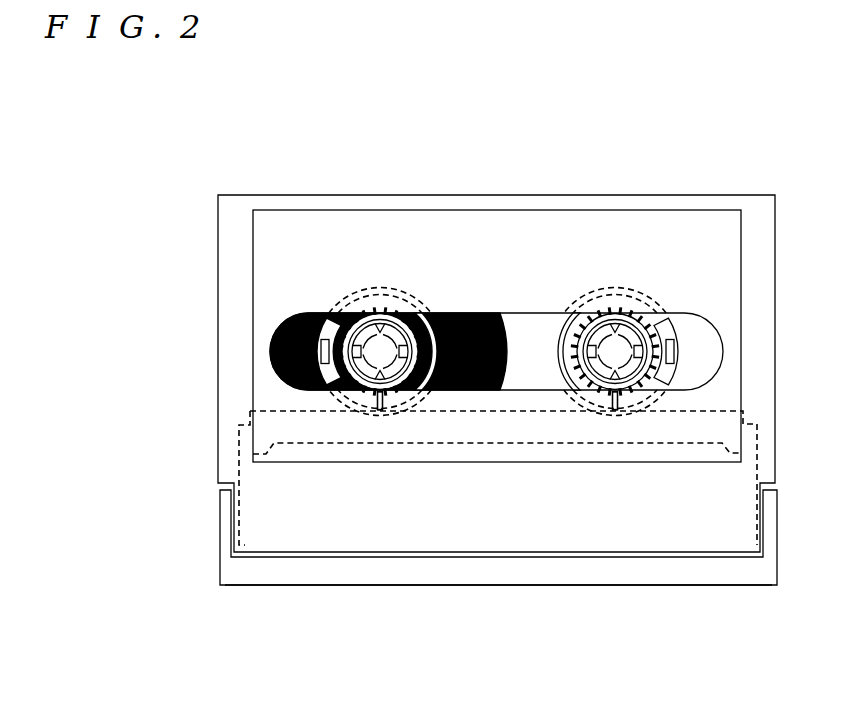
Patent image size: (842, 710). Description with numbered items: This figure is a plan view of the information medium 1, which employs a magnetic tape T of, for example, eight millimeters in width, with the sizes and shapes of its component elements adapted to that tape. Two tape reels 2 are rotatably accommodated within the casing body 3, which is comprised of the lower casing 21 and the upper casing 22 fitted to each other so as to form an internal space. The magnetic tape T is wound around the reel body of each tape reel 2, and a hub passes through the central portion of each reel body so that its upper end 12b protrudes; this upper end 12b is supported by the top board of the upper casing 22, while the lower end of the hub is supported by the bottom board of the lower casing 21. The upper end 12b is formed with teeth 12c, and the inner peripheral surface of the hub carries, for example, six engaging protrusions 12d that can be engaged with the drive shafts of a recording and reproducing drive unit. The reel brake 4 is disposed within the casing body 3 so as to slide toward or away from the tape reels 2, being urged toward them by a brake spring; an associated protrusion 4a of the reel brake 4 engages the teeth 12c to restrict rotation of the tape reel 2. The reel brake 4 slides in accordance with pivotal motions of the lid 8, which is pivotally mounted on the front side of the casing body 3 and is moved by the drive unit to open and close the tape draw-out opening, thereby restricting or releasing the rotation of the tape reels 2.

The information medium 1 is at (498, 169).
The tape reel 2 is at (418, 318).
The casing body 3 is at (205, 290).
The reel brake 4 is at (480, 450).
The protrusion 4a is at (377, 413).
The lid 8 is at (498, 586).
The upper end 12b is at (433, 323).
The teeth 12c is at (347, 324).
The engaging protrusion 12d is at (497, 352).
The lower casing 21 is at (227, 368).
The upper casing 22 is at (227, 330).
The magnetic tape T is at (493, 312).